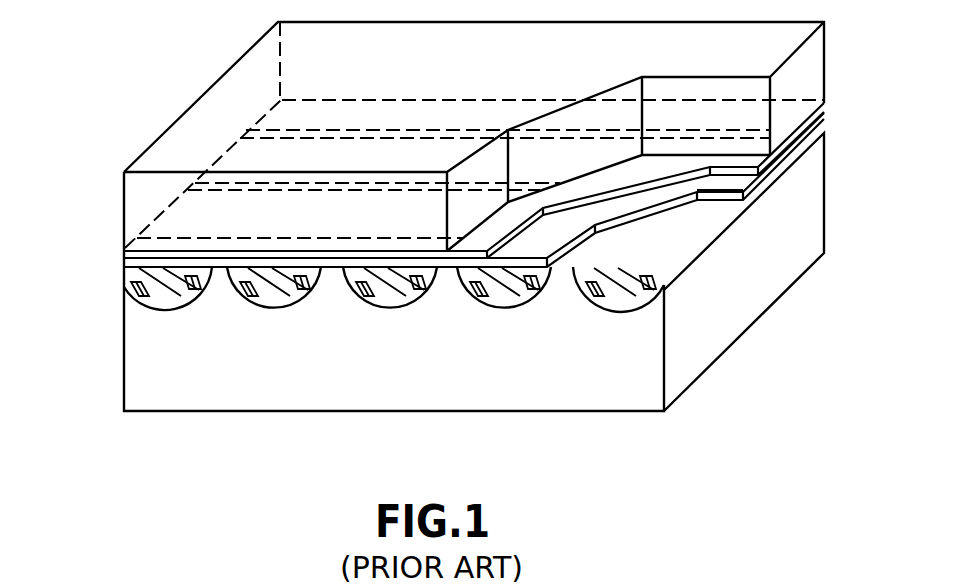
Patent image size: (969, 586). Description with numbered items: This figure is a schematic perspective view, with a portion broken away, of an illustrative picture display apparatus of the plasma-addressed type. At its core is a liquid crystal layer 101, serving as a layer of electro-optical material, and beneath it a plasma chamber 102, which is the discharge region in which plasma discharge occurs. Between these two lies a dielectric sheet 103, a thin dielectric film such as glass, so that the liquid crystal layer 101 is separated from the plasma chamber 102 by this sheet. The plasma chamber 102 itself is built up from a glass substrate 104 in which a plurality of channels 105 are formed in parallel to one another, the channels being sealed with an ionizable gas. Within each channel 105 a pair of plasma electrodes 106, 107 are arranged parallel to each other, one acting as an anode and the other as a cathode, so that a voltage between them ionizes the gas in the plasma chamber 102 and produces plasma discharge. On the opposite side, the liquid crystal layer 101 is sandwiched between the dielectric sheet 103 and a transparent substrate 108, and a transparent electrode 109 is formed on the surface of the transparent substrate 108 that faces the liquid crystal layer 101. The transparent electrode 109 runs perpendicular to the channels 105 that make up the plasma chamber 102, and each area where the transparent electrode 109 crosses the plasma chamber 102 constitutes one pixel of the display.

The liquid crystal layer 101 is at (147, 251).
The plasma chamber 102 is at (398, 298).
The dielectric sheet 103 is at (125, 263).
The glass substrate 104 is at (805, 213).
The channel 105 is at (287, 300).
The plasma electrode 106 is at (243, 302).
The plasma electrode 107 is at (303, 307).
The transparent substrate 108 is at (812, 77).
The transparent electrode 109 is at (225, 152).